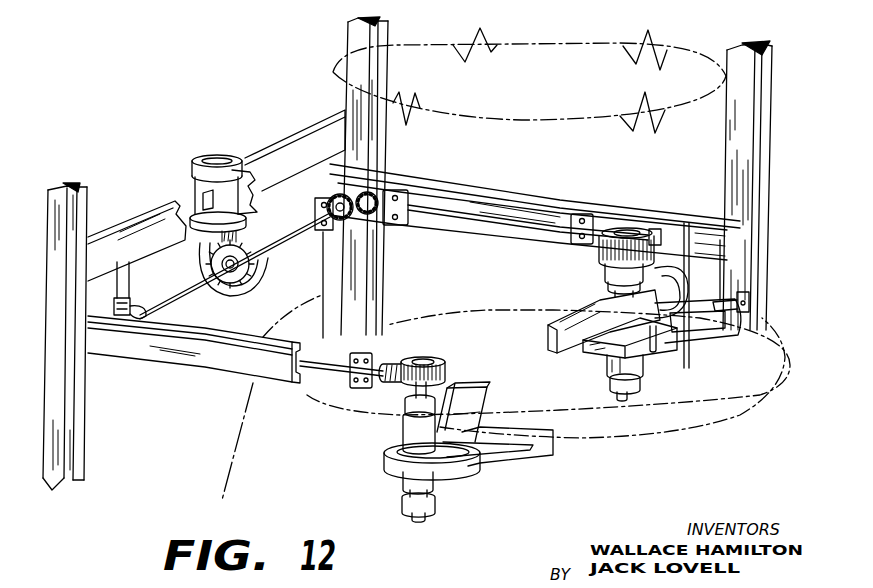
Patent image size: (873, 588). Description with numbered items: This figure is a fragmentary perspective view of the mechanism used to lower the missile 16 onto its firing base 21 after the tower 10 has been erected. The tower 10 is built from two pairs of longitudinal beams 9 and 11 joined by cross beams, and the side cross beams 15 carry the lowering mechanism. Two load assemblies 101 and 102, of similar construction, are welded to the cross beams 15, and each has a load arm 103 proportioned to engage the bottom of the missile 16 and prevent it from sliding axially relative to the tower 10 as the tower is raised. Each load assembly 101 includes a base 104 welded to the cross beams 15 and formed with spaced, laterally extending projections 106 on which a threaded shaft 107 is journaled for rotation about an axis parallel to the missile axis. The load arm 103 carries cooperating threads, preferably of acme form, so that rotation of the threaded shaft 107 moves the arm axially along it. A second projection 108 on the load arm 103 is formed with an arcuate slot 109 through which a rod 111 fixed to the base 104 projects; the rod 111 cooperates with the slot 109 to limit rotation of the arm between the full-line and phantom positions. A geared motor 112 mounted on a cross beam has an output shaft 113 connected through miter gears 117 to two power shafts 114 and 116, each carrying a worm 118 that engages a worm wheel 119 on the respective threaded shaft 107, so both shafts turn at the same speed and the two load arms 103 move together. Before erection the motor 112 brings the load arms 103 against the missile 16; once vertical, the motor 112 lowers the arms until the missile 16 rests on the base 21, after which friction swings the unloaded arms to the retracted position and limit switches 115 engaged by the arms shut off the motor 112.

The longitudinal beams 9 is at (750, 131).
The tower 10 is at (774, 188).
The longitudinal beams 11 is at (68, 207).
The side cross beams 15 is at (477, 202).
The missile 16 is at (337, 95).
The base 21 is at (803, 510).
The load assembly 101 is at (591, 301).
The load assembly 102 is at (396, 354).
The load arm 103 is at (553, 331).
The base 104 is at (695, 348).
The projections 106 is at (600, 266).
The threaded shaft 107 is at (627, 398).
The second projection 108 is at (643, 337).
The slot 109 is at (650, 340).
The rod 111 is at (667, 284).
The geared motor 112 is at (221, 156).
The output shaft 113 is at (272, 247).
The power shaft 114 is at (510, 224).
The limit switches 115 is at (749, 299).
The power shaft 116 is at (333, 372).
The miter gears 117 is at (134, 306).
The worm 118 is at (652, 230).
The worm wheel 119 is at (610, 229).